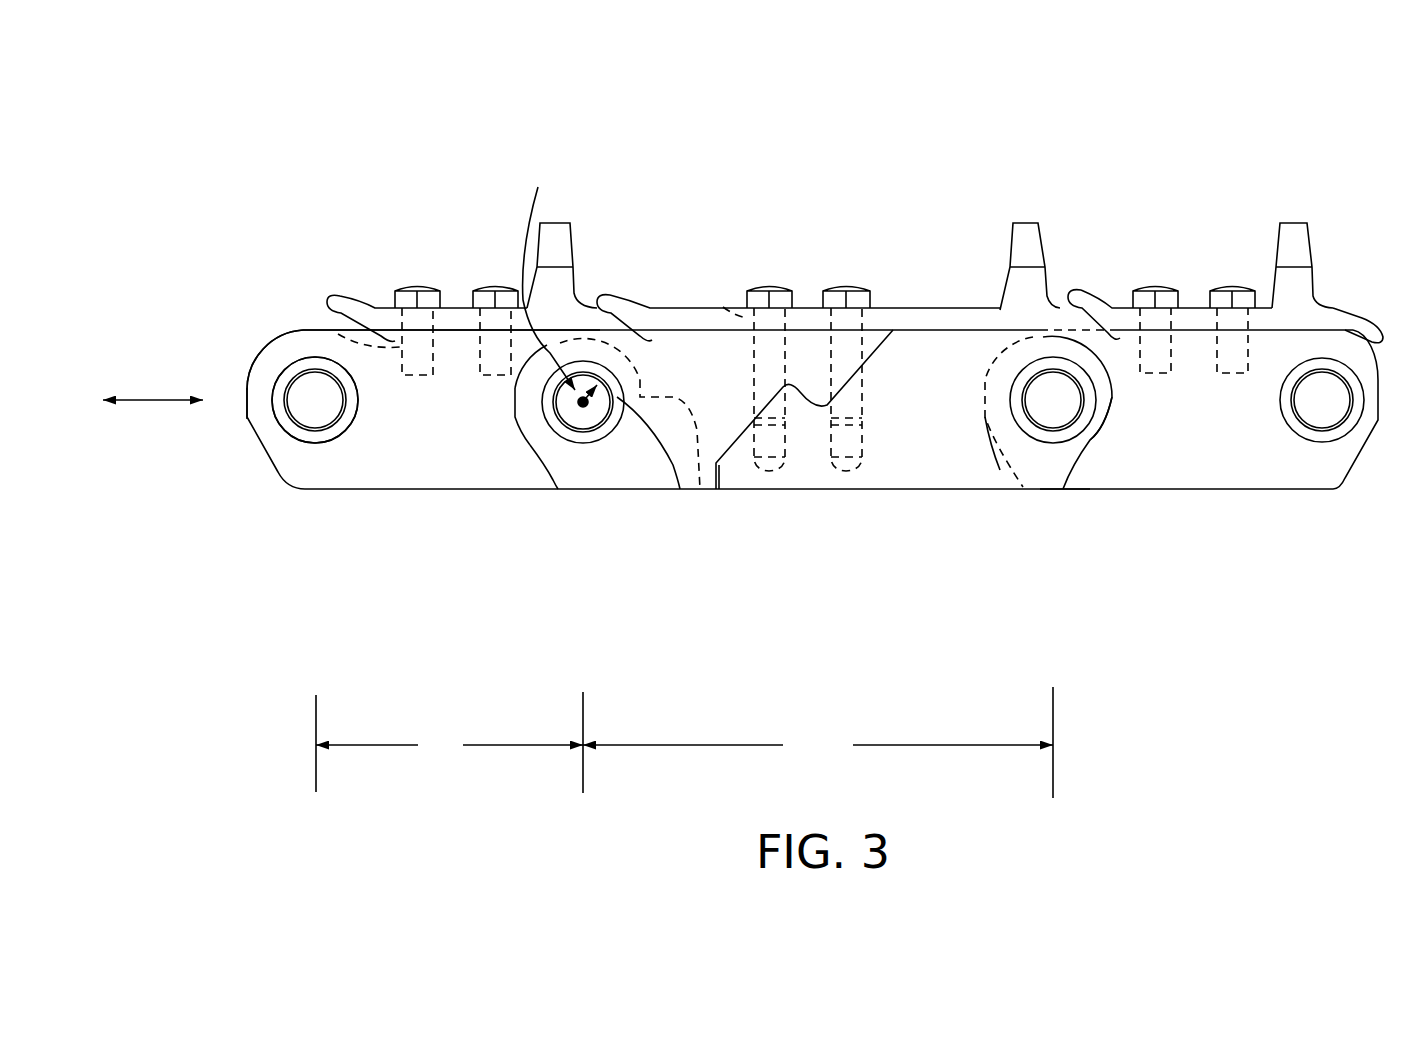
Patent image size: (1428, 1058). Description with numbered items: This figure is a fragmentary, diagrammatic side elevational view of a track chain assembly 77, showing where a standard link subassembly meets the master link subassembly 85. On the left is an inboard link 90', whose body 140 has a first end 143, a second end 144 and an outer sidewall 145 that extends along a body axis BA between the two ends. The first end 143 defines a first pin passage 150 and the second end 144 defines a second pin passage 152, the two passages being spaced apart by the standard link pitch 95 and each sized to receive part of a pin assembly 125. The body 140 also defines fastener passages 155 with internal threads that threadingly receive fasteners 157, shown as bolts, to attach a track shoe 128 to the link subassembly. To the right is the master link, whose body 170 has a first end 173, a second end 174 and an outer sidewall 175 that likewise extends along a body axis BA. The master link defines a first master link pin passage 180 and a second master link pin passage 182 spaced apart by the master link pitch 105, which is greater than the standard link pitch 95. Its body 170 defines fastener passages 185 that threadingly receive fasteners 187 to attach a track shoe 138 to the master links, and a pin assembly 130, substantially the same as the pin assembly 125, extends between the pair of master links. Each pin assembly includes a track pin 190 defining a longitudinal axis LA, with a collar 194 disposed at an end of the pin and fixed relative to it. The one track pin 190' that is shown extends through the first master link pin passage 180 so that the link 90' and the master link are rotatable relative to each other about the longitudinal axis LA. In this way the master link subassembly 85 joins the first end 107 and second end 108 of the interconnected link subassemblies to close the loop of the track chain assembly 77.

The track chain assembly 77 is at (250, 512).
The master link subassembly 85 is at (750, 150).
The inboard link 90' is at (794, 460).
The standard link pitch 95 is at (449, 742).
The master link pitch 105 is at (818, 742).
The first end 107 is at (547, 483).
The second end 108 is at (1062, 490).
The pin assembly 125 is at (530, 400).
The track shoe 128 is at (367, 297).
The pin assembly 130 is at (1110, 430).
The track shoe 138 is at (1060, 320).
The body 140 is at (332, 343).
The first end 143 is at (245, 393).
The second end 144 is at (650, 420).
The outer sidewall 145 is at (331, 472).
The first pin passage 150 is at (318, 440).
The second pin passage 152 is at (600, 410).
The fastener passage 155 is at (323, 320).
The fastener 157 is at (420, 285).
The body 170 is at (980, 470).
The first end 173 is at (528, 442).
The second end 174 is at (1112, 397).
The outer sidewall 175 is at (898, 430).
The first master link pin passage 180 is at (677, 489).
The second master link pin passage 182 is at (1056, 362).
The fastener passage 185 is at (723, 307).
The fastener 187 is at (848, 283).
The track pin 190 is at (818, 400).
The track pin 190' is at (494, 485).
The collar 194 is at (287, 427).
The longitudinal axis LA is at (549, 272).
The body axis BA is at (155, 397).